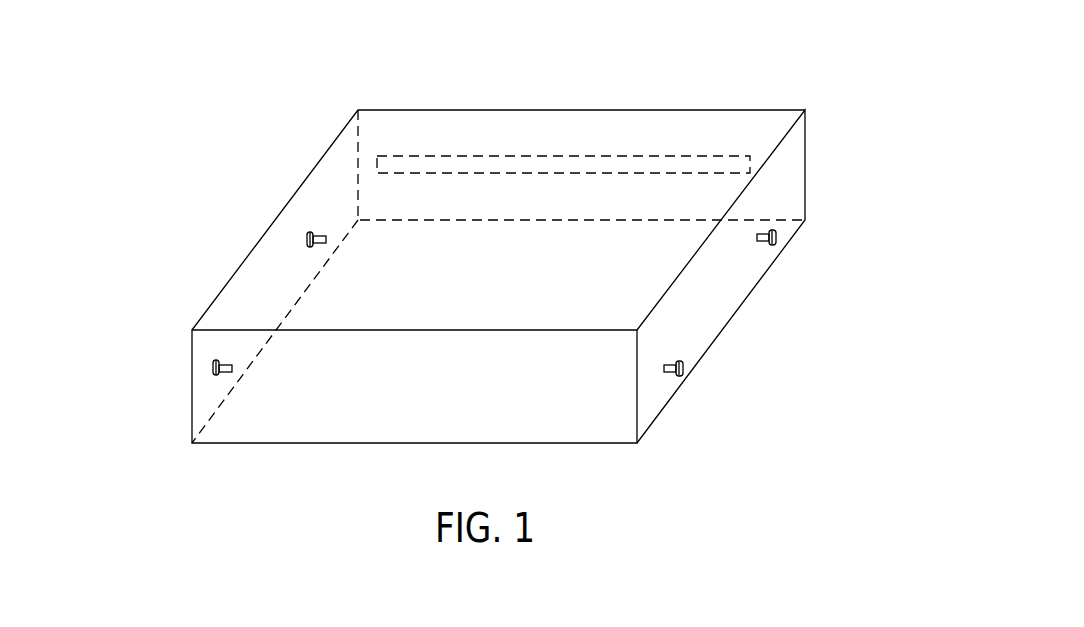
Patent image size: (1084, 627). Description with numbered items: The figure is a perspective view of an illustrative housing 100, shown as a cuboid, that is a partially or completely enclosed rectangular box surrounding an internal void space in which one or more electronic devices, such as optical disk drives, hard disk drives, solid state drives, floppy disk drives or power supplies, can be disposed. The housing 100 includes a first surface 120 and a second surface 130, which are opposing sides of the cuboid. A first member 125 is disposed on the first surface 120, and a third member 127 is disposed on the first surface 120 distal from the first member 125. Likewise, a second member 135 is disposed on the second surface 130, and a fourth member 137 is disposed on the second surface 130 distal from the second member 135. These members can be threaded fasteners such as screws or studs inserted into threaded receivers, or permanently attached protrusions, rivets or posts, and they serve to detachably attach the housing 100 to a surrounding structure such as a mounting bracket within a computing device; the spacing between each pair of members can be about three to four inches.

The housing 100 is at (755, 55).
The first surface 120 is at (263, 291).
The first member 125 is at (225, 377).
The third member 127 is at (322, 235).
The second surface 130 is at (716, 313).
The second member 135 is at (687, 367).
The fourth member 137 is at (777, 238).